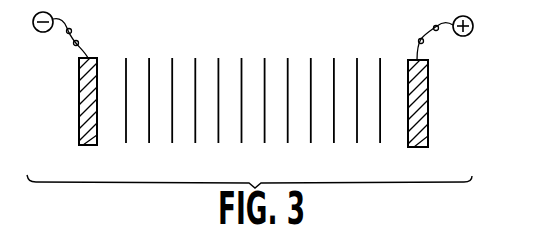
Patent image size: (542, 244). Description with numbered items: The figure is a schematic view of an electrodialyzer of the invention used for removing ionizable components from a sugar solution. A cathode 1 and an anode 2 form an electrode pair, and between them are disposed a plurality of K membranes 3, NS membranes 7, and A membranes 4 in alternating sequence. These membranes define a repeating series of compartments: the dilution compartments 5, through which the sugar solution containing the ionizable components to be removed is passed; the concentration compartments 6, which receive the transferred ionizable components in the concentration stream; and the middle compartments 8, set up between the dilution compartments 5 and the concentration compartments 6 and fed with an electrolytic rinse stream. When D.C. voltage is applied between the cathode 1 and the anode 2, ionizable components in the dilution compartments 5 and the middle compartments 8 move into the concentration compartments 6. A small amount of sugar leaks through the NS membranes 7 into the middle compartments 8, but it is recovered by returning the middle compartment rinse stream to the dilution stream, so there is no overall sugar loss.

The cathode 1 is at (79, 103).
The anode 2 is at (428, 105).
The K membrane 3 is at (276, 89).
The A membrane 4 is at (253, 89).
The dilution compartment 5 is at (184, 128).
The concentration compartment 6 is at (161, 128).
The NS membrane 7 is at (230, 89).
The middle compartment 8 is at (138, 128).